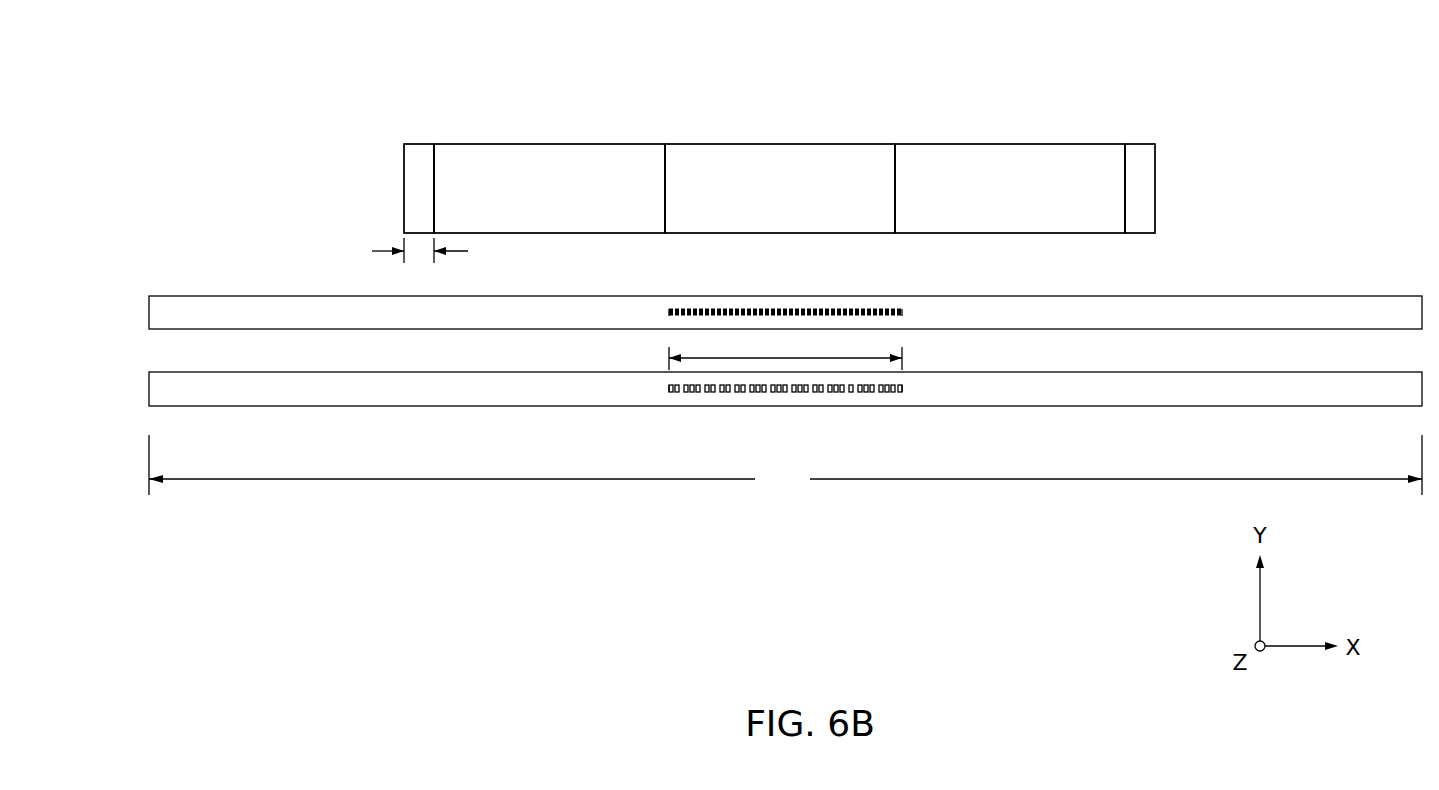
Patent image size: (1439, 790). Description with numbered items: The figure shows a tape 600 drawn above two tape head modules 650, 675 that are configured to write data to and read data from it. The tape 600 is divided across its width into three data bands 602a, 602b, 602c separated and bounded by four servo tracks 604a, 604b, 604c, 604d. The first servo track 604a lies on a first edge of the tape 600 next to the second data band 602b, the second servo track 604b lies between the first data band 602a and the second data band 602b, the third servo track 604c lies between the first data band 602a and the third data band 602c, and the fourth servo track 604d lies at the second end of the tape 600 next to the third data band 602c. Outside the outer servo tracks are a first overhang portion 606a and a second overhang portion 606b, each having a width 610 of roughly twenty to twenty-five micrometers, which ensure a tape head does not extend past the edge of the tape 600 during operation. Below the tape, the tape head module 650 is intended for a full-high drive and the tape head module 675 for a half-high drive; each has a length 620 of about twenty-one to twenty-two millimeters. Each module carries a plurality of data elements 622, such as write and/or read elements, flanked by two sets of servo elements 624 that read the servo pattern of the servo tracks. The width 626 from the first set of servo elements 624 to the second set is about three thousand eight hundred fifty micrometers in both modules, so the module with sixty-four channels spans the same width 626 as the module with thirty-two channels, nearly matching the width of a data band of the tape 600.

The tape 600 is at (374, 70).
The first data band 602a is at (755, 207).
The second data band 602b is at (499, 207).
The third data band 602c is at (998, 207).
The first servo track 604a is at (435, 160).
The second servo track 604b is at (666, 160).
The third servo track 604c is at (896, 162).
The fourth servo track 604d is at (1126, 160).
The first overhang portion 606a is at (421, 190).
The second overhang portion 606b is at (1140, 178).
The width of overhang portion 610 is at (420, 266).
The length of tape head module 620 is at (785, 465).
The data elements 622 is at (897, 298).
The servo elements 624 is at (668, 312).
The width between servo element sets 626 is at (785, 352).
The tape head module for full-high drive 650 is at (147, 308).
The tape head module for half-high drive 675 is at (147, 386).